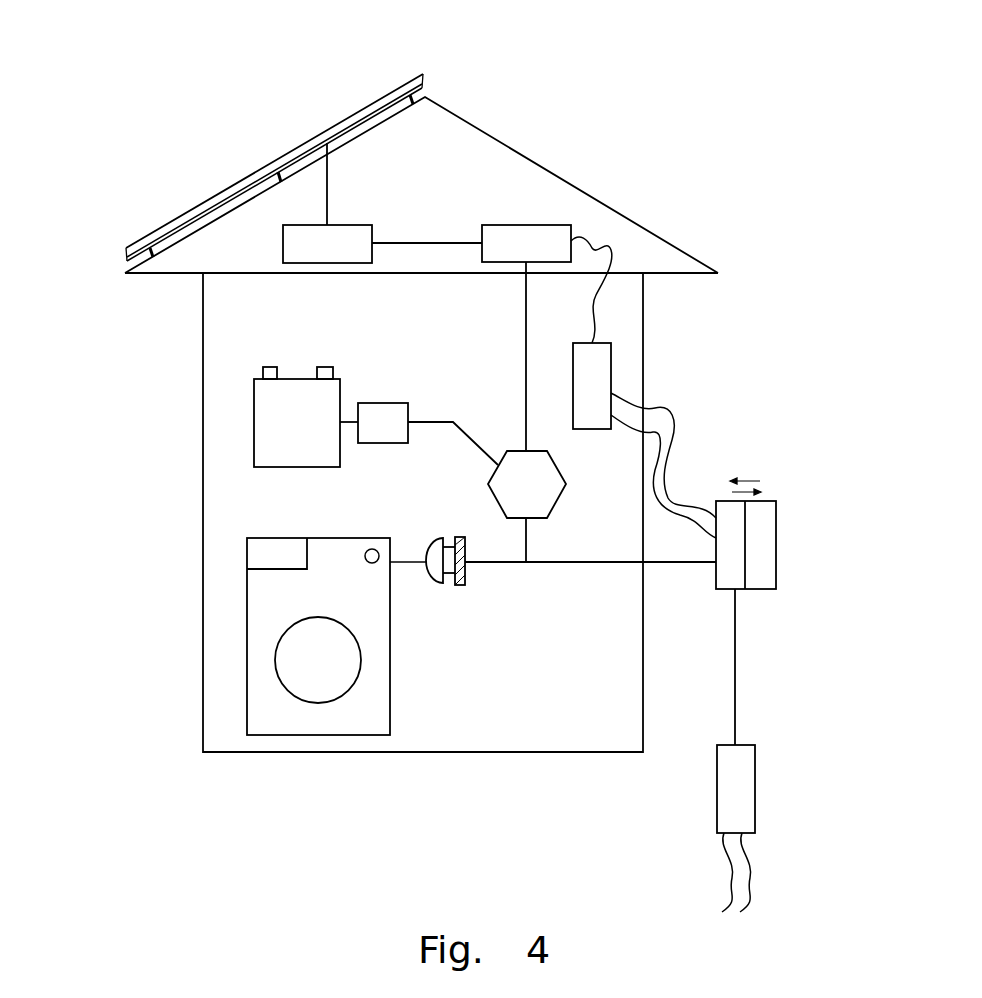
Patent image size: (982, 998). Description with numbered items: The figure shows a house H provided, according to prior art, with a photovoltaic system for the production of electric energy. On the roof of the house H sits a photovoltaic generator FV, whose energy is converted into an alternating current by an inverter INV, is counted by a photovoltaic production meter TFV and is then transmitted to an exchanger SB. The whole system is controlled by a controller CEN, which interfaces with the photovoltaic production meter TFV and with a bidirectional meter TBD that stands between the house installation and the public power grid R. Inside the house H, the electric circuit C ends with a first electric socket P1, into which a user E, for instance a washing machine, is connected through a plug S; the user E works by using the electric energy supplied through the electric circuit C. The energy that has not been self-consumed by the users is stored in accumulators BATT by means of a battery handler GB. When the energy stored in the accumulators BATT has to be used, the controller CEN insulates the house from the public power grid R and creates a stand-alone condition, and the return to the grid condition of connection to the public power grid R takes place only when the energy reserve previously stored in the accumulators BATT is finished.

The photovoltaic generator FV is at (366, 112).
The inverter INV is at (312, 243).
The photovoltaic production meter TFV is at (507, 243).
The house H is at (604, 200).
The battery handler GB is at (382, 418).
The accumulators BATT is at (272, 442).
The controller CEN is at (595, 370).
The exchanger SB is at (548, 478).
The bidirectional meter TBD is at (762, 526).
The user E is at (272, 605).
The plug S is at (436, 585).
The first electric socket P1 is at (463, 585).
The electric circuit C is at (602, 566).
The public power grid R is at (738, 793).